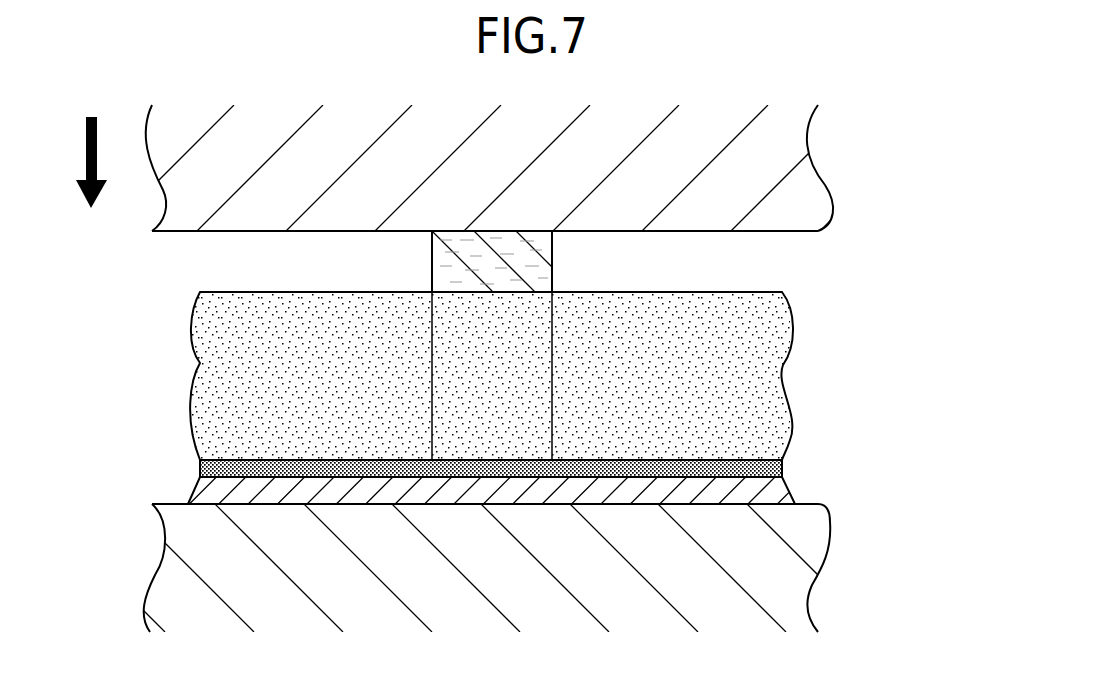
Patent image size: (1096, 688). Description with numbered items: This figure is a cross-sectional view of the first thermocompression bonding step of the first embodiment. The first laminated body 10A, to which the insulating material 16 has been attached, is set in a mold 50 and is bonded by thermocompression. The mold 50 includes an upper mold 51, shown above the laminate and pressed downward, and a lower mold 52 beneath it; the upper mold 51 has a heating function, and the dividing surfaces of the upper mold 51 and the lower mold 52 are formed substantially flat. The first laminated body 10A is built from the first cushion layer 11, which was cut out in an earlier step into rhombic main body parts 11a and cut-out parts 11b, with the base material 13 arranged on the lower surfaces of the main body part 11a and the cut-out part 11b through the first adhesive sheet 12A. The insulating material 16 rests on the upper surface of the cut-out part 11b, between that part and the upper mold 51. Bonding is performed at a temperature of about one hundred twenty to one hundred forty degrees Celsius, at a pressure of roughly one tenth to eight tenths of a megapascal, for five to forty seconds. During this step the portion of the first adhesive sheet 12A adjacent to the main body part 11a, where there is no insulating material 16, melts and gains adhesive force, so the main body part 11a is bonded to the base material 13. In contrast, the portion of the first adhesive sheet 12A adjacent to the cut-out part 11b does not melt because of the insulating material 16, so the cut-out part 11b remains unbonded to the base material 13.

The mold 50 is at (532, 148).
The upper mold 51 is at (783, 170).
The first laminated body 10A is at (538, 370).
The insulating material 16 is at (552, 257).
The first cushion layer 11 is at (497, 376).
The main body part 11a is at (655, 372).
The cut-out part 11b is at (480, 340).
The first adhesive sheet 12A is at (784, 468).
The base material 13 is at (798, 493).
The lower mold 52 is at (783, 583).